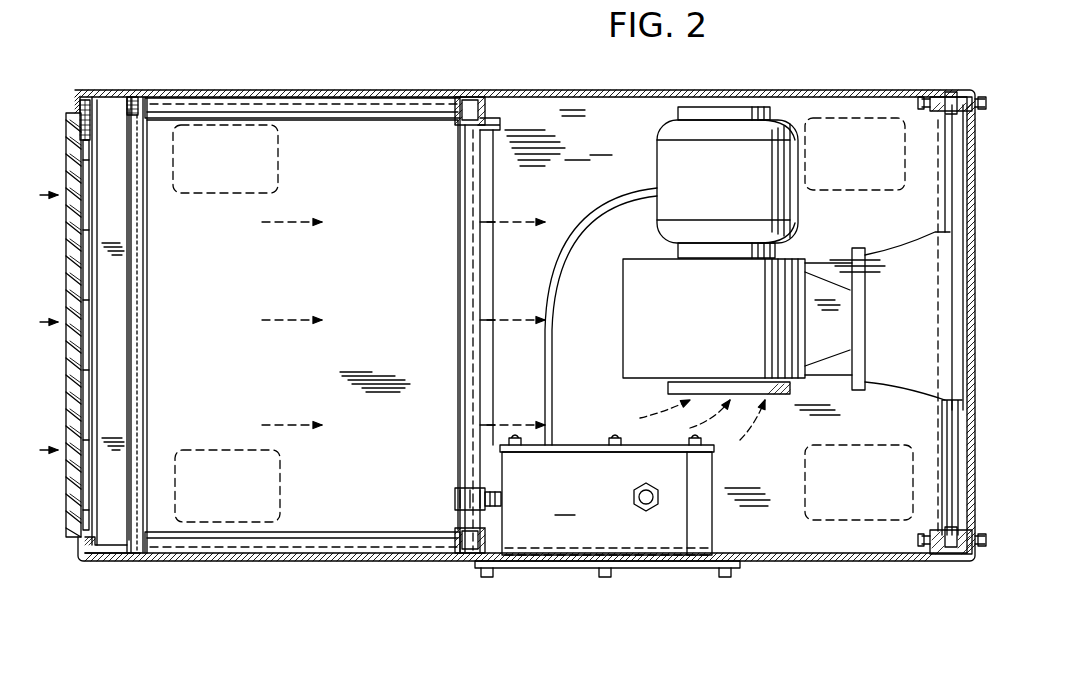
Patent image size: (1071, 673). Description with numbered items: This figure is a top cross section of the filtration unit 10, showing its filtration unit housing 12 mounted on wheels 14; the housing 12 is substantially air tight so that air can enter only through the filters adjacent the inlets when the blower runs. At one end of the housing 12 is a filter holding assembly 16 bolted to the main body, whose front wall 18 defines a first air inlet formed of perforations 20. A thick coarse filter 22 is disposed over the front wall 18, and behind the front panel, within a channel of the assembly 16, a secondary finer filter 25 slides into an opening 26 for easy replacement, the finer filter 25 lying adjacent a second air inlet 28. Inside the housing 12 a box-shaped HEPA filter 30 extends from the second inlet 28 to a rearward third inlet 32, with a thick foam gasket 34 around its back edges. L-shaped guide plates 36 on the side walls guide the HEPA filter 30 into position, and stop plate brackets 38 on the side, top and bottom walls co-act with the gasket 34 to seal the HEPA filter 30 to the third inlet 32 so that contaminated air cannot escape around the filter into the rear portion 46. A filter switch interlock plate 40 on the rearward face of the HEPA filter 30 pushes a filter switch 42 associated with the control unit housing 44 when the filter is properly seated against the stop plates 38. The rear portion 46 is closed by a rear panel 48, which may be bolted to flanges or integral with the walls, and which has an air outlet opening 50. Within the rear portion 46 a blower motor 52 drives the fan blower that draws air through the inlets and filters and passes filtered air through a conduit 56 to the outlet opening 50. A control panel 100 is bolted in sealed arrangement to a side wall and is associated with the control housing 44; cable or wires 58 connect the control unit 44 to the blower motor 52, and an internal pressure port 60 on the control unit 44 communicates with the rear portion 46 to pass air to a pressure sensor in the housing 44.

The filtration unit 10 is at (187, 577).
The filtration unit housing 12 is at (762, 91).
The wheels 14 is at (282, 150).
The filter holding assembly 16 is at (113, 88).
The front wall 18 is at (88, 99).
The perforations 20 is at (74, 128).
The thick coarse filter 22 is at (70, 480).
The secondary finer filter 25 is at (135, 388).
The opening 26 is at (110, 556).
The second air inlet 28 is at (139, 247).
The HEPA filter 30 is at (395, 150).
The third inlet 32 is at (487, 128).
The foam gasket 34 is at (460, 206).
The L-shaped guide plates 36 is at (205, 104).
The stop plate brackets 38 is at (480, 112).
The filter switch interlock plate 40 is at (458, 492).
The filter switch 42 is at (492, 506).
The control unit housing 44 is at (607, 495).
The rear portion 46 is at (599, 144).
The rear panel 48 is at (955, 92).
The air outlet opening 50 is at (945, 403).
The blower motor 52 is at (660, 150).
The conduit 56 is at (866, 258).
The cable or wires 58 is at (590, 262).
The internal pressure port 60 is at (648, 511).
The control panel 100 is at (680, 572).